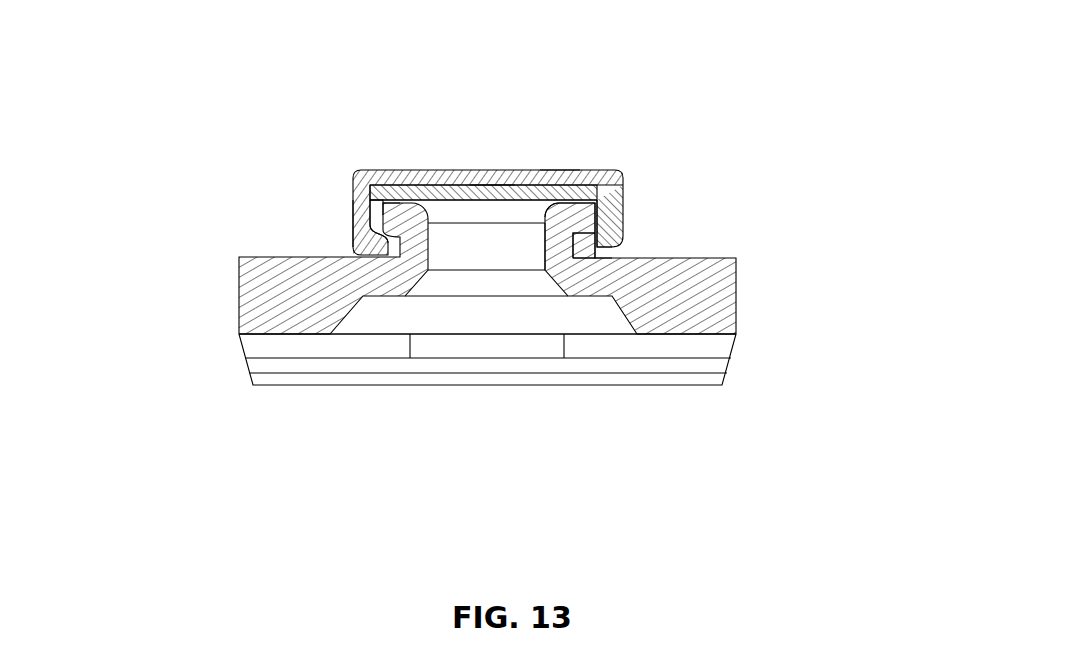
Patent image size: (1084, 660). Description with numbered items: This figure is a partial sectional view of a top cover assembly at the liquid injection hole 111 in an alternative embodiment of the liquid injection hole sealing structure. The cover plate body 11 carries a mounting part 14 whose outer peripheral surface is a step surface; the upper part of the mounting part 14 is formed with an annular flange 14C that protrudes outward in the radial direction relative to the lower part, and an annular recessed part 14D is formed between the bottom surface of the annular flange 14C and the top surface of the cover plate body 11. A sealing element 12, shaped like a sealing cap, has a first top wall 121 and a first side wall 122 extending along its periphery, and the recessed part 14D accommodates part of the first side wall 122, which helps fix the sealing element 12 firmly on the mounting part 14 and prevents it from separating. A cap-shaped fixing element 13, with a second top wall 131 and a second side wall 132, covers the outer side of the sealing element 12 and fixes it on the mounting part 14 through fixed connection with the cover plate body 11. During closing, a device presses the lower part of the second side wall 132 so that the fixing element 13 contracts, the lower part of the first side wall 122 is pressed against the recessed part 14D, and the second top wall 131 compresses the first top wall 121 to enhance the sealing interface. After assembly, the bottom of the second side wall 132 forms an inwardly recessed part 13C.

The cover plate body 11 is at (264, 283).
The liquid injection hole 111 is at (472, 305).
The sealing element 12 is at (600, 200).
The first top wall 121 is at (492, 170).
The first side wall 122 is at (378, 223).
The fixing element 13 is at (621, 173).
The second top wall 131 is at (559, 170).
The second side wall 132 is at (620, 218).
The inwardly recessed part 13C is at (372, 228).
The mounting part 14 is at (553, 236).
The annular flange 14C is at (385, 207).
The recessed part 14D is at (594, 259).